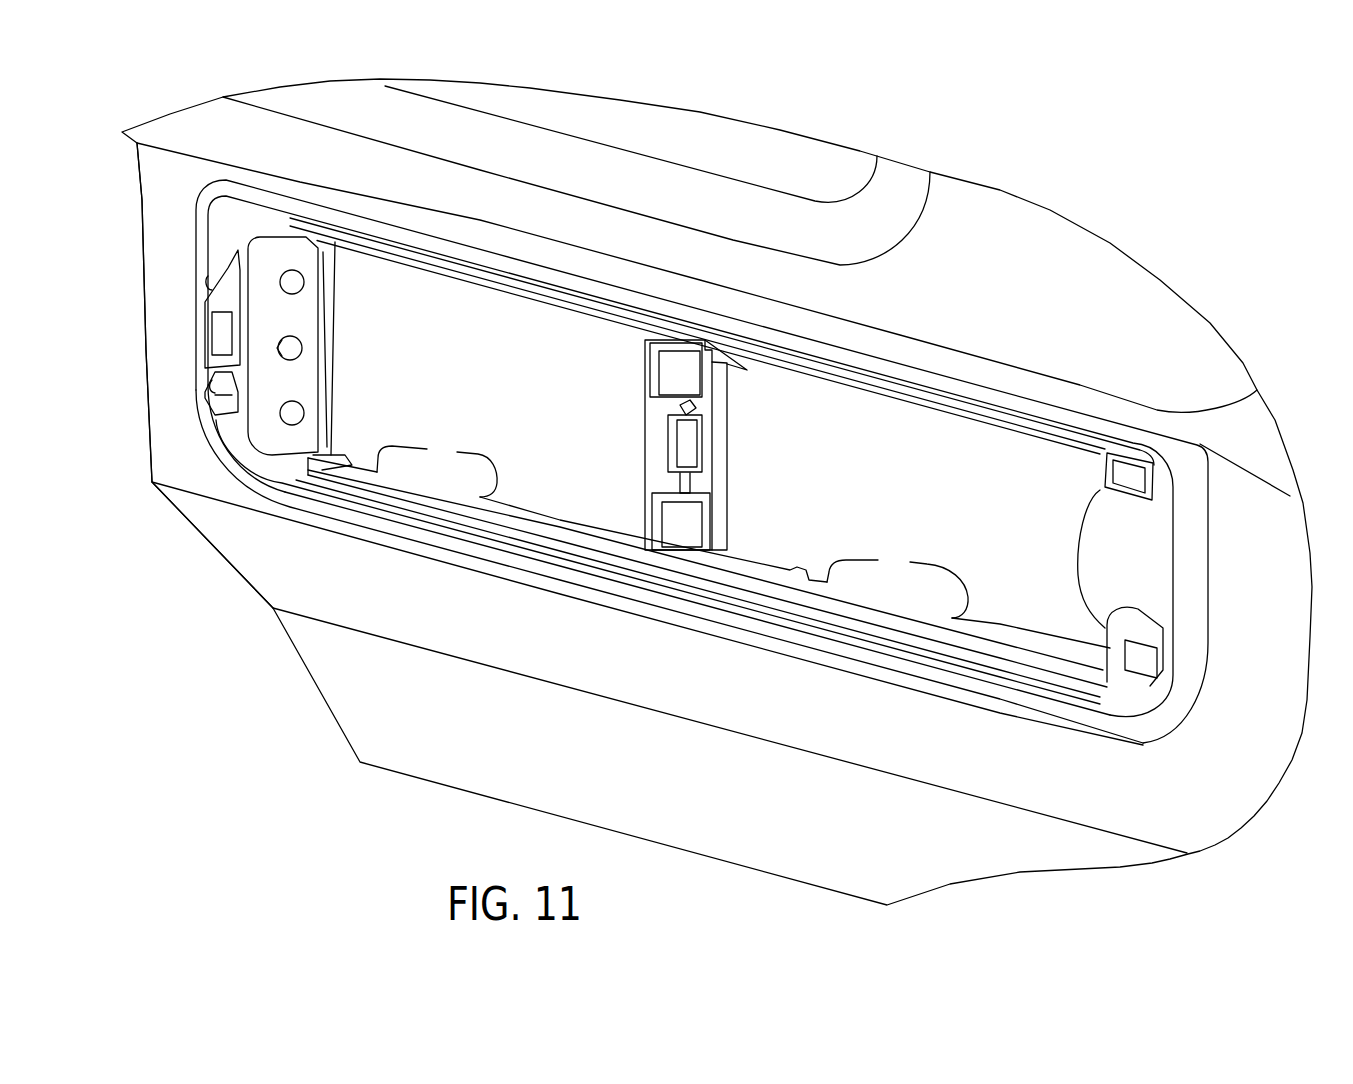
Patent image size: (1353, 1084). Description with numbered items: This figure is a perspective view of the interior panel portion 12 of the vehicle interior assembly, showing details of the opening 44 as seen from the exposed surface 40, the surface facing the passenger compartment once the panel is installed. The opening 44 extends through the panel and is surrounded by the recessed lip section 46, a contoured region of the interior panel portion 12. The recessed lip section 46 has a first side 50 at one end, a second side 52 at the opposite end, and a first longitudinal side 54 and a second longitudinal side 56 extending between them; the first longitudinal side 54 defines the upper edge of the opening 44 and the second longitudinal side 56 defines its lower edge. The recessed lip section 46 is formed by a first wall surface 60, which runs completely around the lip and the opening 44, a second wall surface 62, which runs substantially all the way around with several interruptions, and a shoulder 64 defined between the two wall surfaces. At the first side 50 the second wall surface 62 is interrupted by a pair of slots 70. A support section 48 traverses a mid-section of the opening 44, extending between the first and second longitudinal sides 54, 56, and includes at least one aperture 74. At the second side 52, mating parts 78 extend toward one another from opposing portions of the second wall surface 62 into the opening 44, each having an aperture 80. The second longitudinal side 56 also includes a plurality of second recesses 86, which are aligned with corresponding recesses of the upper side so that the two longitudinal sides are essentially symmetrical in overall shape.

The interior panel portion 12 is at (1022, 260).
The exposed surface 40 is at (172, 447).
The opening 44 is at (336, 460).
The recessed lip section 46 is at (1006, 746).
The support section 48 is at (723, 390).
The first side 50 is at (240, 378).
The second side 52 is at (1160, 560).
The first longitudinal side 54 is at (457, 287).
The second longitudinal side 56 is at (760, 605).
The first wall surface 60 is at (1012, 670).
The second wall surface 62 is at (890, 634).
The shoulder 64 is at (930, 656).
The slots 70 is at (220, 270).
The aperture 74 is at (662, 372).
The mating parts 78 is at (1093, 497).
The aperture 80 is at (1133, 500).
The second recesses 86 is at (672, 528).